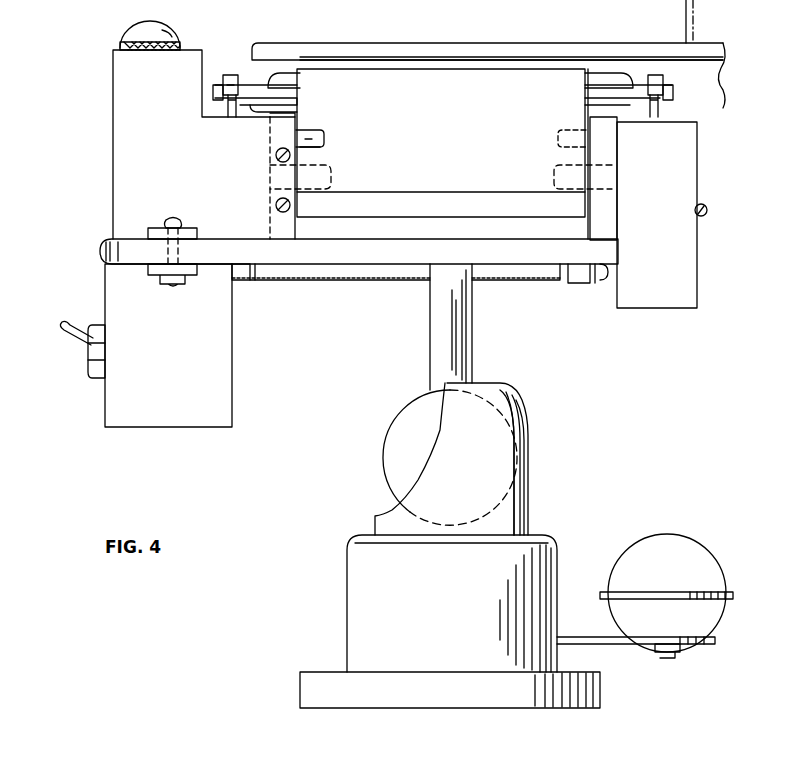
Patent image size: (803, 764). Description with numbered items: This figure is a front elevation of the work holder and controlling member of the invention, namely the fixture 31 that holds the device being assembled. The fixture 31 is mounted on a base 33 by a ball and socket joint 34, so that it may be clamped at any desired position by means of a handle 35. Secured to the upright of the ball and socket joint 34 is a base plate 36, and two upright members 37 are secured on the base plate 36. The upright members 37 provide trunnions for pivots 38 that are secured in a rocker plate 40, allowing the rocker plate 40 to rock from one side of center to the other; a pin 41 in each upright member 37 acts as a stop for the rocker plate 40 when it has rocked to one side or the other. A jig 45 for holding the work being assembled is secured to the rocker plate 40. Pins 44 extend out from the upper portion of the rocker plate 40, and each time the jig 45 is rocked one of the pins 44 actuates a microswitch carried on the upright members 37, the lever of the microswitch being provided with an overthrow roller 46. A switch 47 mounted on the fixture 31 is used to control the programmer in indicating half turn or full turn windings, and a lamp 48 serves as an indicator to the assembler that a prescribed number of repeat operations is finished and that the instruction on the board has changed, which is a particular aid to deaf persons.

The fixture 31 is at (335, 340).
The base 33 is at (350, 601).
The ball and socket joint 34 is at (510, 392).
The handle 35 is at (678, 538).
The base plate 36 is at (375, 263).
The upright members 37 is at (297, 113).
The pivots 38 is at (282, 180).
The rocker plate 40 is at (484, 68).
The pin 41 is at (325, 138).
The pins 44 is at (258, 85).
The jig 45 is at (600, 43).
The overthrow roller 46 is at (228, 74).
The switch 47 is at (66, 345).
The lamp 48 is at (168, 28).